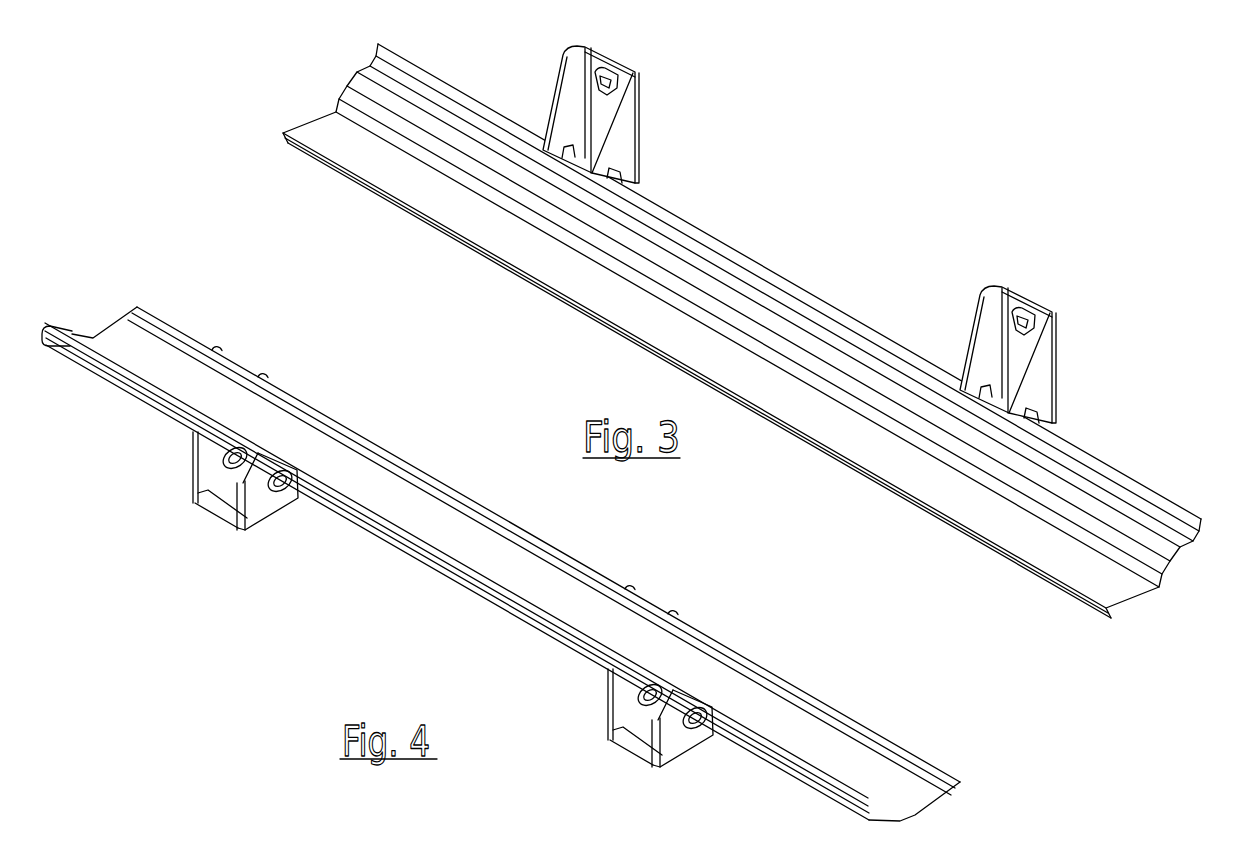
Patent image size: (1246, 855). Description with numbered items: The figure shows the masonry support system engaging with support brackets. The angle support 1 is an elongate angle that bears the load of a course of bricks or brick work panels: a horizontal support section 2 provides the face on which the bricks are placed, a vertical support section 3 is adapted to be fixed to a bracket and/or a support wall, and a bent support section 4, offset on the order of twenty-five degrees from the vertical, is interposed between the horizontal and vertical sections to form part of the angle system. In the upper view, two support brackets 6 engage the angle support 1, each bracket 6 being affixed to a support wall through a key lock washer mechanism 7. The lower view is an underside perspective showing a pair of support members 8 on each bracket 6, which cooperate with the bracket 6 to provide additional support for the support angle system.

In FIG. 3, the angle support 1 is at (738, 324).
In FIG. 4, the angle support 1 is at (447, 570).
In FIG. 3, the horizontal support section 2 is at (323, 130).
In FIG. 3, the vertical support section 3 is at (787, 284).
In FIG. 3, the bent support section 4 is at (355, 88).
In FIG. 3, the support bracket 6 is at (620, 118).
In FIG. 4, the support bracket 6 is at (195, 497).
In FIG. 3, the key lock washer mechanism 7 is at (628, 72).
In FIG. 4, the support members 8 is at (217, 463).